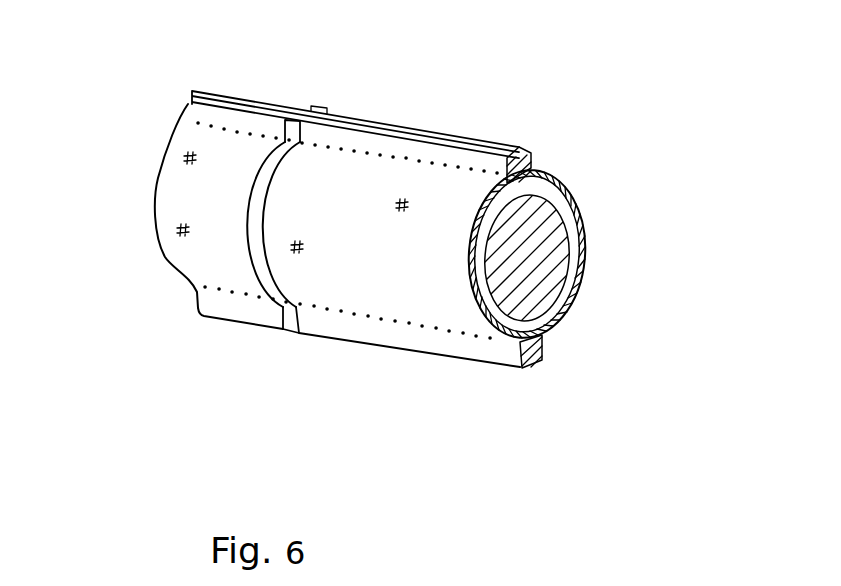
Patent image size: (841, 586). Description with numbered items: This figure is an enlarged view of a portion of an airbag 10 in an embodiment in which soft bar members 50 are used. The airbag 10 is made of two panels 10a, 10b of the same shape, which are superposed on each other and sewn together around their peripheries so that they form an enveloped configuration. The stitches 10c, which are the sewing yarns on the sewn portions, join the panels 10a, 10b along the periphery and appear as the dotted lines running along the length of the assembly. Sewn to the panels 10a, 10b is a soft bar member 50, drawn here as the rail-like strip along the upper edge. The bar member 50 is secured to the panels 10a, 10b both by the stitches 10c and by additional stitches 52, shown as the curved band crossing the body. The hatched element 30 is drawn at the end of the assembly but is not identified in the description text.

The airbag 10 is at (433, 228).
The panel 10a is at (580, 198).
The panel 10b is at (452, 227).
The stitches 10c is at (405, 160).
The hatched core 30 is at (547, 267).
The bar member 50 is at (318, 105).
The additional stitches 52 is at (287, 162).